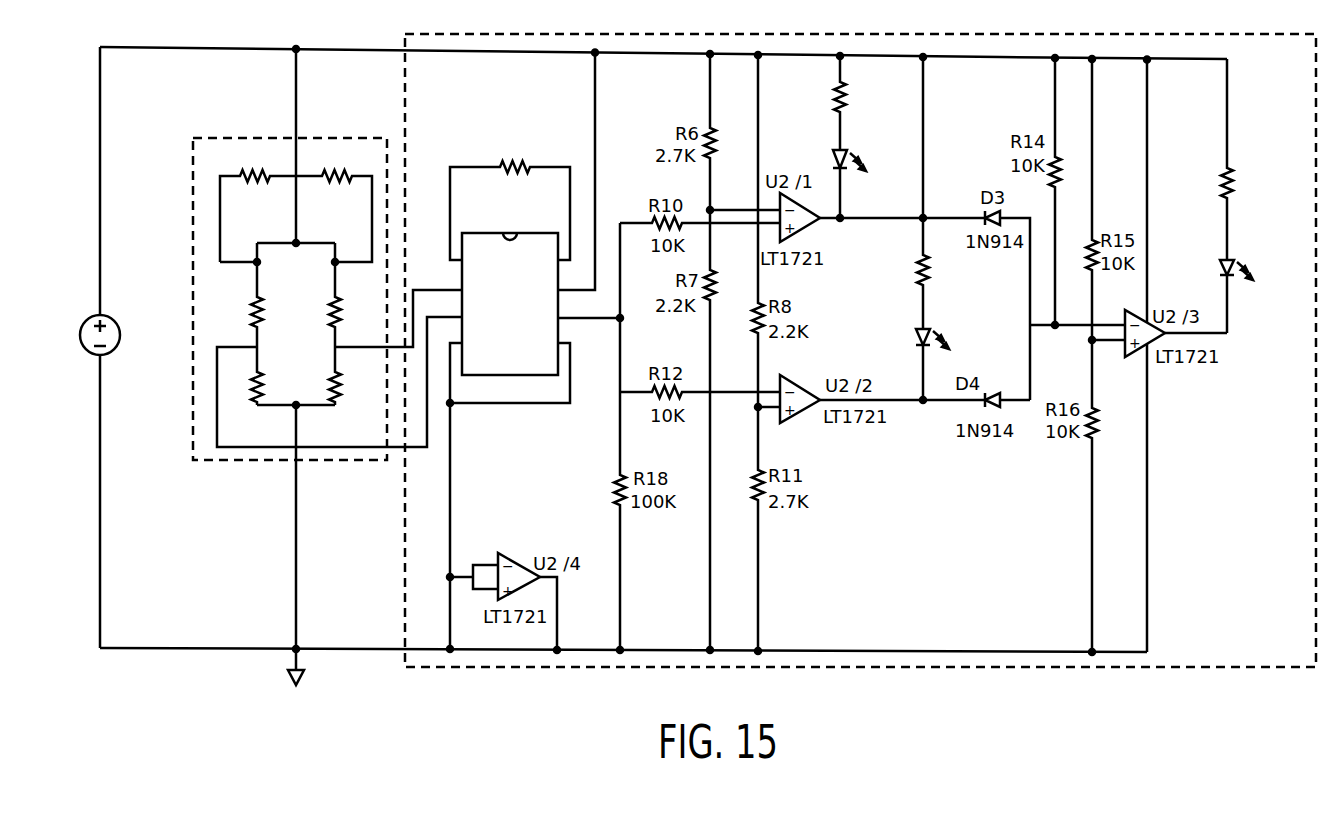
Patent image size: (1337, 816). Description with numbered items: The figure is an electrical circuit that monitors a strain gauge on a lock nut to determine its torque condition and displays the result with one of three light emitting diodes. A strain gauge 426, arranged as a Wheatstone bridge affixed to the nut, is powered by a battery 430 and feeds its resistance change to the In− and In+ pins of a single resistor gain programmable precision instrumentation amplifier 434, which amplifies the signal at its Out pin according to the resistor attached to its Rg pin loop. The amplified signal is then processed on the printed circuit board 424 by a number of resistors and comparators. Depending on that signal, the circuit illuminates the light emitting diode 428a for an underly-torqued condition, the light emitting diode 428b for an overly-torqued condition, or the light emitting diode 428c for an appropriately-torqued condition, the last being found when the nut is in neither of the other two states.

The printed circuit board 424 is at (405, 558).
The strain gauge 426 is at (193, 182).
The battery 430 is at (140, 335).
The instrumentation amplifier 434 is at (470, 232).
The light emitting diode 428a is at (822, 148).
The light emitting diode 428b is at (906, 333).
The light emitting diode 428c is at (1199, 265).